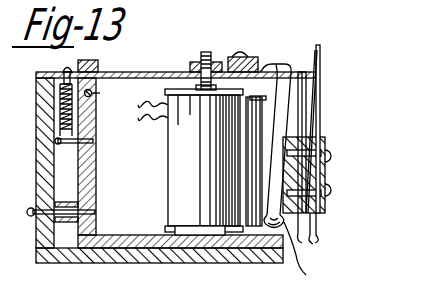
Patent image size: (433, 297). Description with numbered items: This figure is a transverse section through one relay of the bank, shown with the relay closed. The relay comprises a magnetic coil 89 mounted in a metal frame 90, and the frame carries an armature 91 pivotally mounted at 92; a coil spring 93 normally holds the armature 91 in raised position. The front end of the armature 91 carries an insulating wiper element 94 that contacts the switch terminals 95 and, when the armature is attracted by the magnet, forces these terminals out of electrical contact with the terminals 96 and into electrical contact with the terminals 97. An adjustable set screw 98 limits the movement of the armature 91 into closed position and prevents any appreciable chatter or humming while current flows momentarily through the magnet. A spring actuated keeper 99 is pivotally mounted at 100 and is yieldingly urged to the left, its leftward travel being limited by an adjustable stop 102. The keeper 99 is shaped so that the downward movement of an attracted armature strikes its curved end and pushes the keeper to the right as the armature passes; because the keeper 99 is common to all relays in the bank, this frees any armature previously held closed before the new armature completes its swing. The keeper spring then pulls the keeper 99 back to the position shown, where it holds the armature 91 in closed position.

The magnetic coil 89 is at (170, 158).
The metal frame 90 is at (110, 236).
The armature 91 is at (134, 68).
The armature pivot 92 is at (92, 93).
The coil spring 93 is at (62, 112).
The insulating wiper element 94 is at (263, 50).
The switch terminals 95 is at (318, 45).
The terminals 96 is at (302, 90).
The terminals 97 is at (320, 76).
The adjustable set screw 98 is at (212, 44).
The spring actuated keeper 99 is at (290, 62).
The keeper pivot 100 is at (311, 255).
The adjustable stop 102 is at (271, 96).